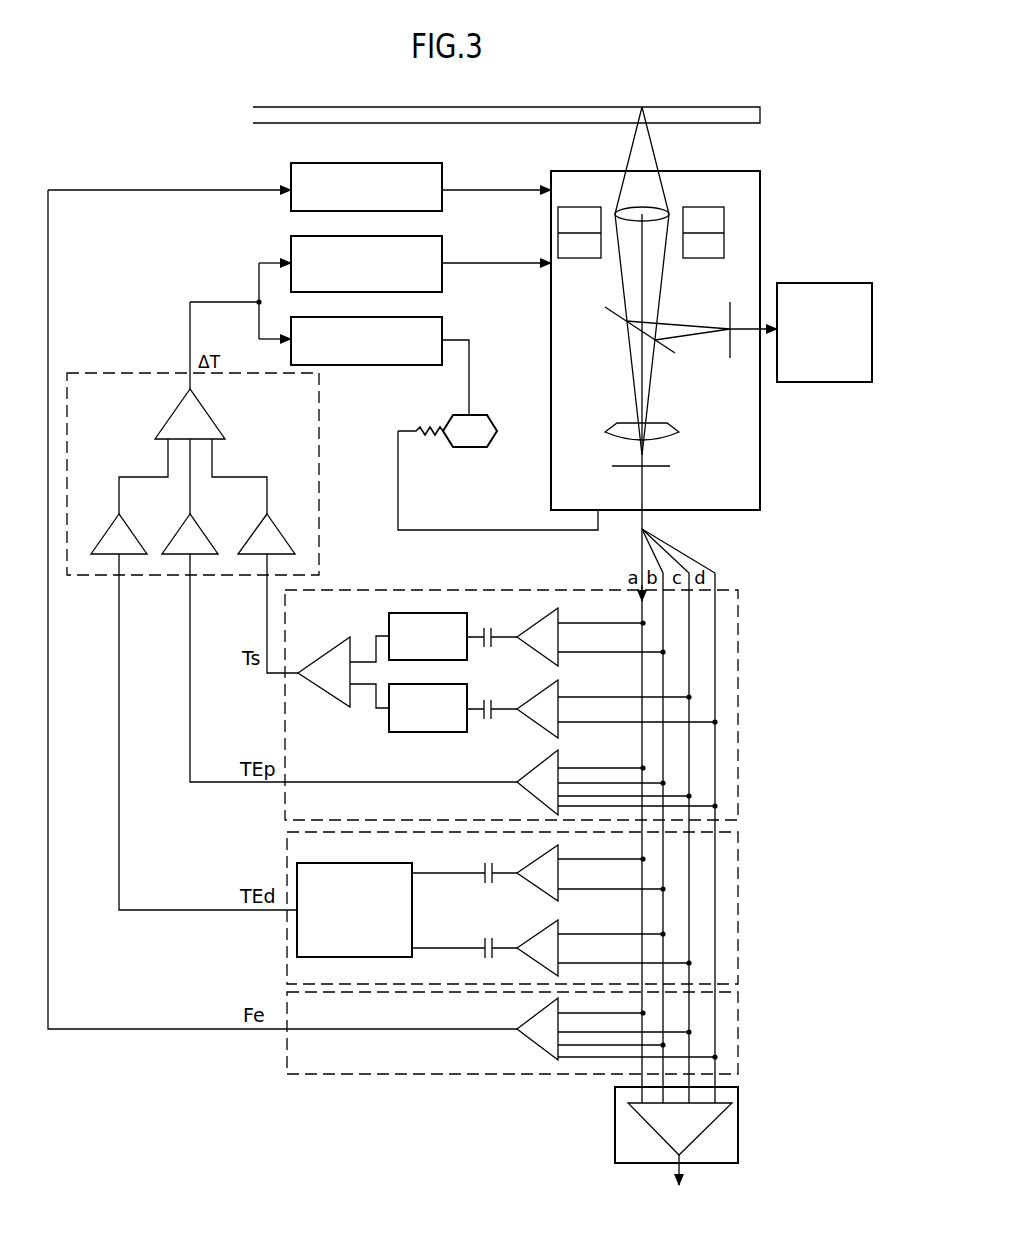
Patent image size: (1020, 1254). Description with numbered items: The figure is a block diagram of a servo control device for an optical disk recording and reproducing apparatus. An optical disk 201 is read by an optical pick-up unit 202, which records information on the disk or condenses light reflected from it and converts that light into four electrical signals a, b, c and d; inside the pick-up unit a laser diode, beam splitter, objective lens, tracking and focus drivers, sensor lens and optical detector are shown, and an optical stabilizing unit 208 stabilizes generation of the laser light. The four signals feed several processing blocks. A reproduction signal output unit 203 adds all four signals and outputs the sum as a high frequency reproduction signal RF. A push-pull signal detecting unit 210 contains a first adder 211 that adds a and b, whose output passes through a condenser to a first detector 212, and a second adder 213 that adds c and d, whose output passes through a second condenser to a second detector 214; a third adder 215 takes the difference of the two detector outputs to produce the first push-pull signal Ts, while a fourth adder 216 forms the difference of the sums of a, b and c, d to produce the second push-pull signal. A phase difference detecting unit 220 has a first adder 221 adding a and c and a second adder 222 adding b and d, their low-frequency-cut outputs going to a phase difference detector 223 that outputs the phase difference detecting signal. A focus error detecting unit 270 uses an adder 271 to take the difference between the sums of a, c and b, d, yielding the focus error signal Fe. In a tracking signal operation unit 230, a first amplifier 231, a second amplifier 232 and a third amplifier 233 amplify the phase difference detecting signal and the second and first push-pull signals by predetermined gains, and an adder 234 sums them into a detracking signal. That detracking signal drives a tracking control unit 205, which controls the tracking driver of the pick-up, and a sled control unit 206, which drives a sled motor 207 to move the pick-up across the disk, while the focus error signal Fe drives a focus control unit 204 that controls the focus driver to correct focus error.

The optical disk 201 is at (760, 115).
The optical pick-up unit 202 is at (748, 195).
The reproduction signal output unit 203 is at (727, 1140).
The focus control unit 204 is at (360, 163).
The tracking control unit 205 is at (438, 276).
The sled control unit 206 is at (402, 366).
The sled motor 207 is at (470, 448).
The optical stabilizing unit 208 is at (828, 383).
The push-pull signal detecting unit 210 is at (550, 705).
The first adder 211 is at (558, 637).
The first detector 212 is at (393, 620).
The second adder 213 is at (558, 730).
The second detector 214 is at (430, 732).
The third adder 215 is at (322, 683).
The fourth adder 216 is at (537, 778).
The phase difference detecting unit 220 is at (551, 908).
The first adder 221 is at (558, 873).
The second adder 222 is at (558, 948).
The phase difference detector 223 is at (412, 912).
The tracking signal operation unit 230 is at (221, 474).
The first amplifier 231 is at (110, 532).
The second amplifier 232 is at (181, 532).
The third amplifier 233 is at (258, 532).
The adder 234 is at (200, 411).
The focus error detecting unit 270 is at (551, 1033).
The adder 271 is at (537, 1025).